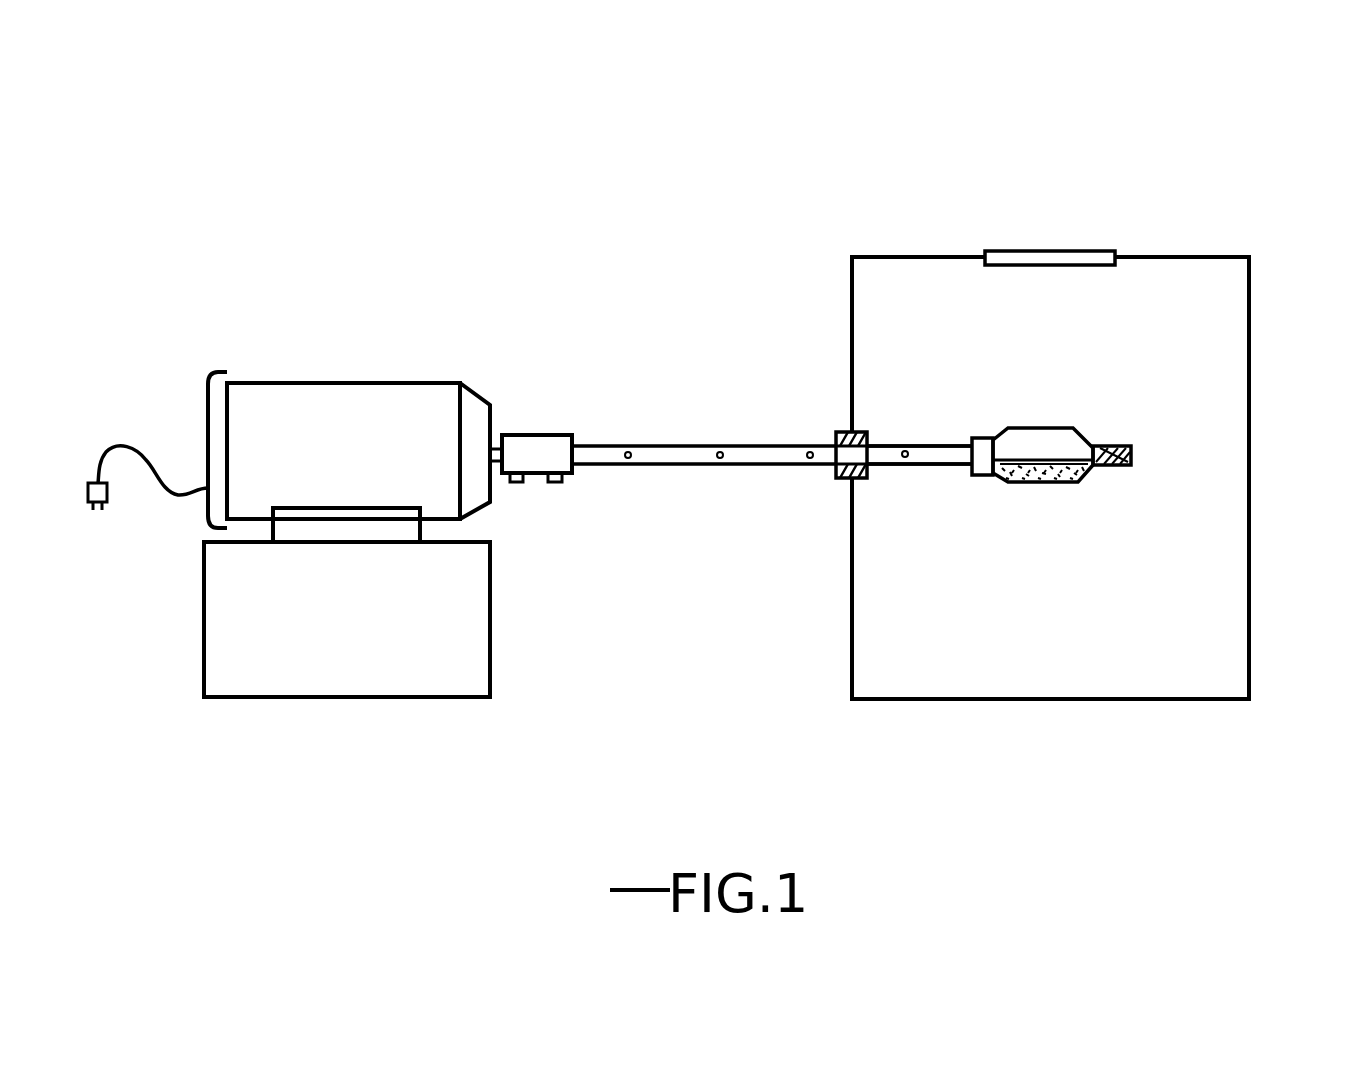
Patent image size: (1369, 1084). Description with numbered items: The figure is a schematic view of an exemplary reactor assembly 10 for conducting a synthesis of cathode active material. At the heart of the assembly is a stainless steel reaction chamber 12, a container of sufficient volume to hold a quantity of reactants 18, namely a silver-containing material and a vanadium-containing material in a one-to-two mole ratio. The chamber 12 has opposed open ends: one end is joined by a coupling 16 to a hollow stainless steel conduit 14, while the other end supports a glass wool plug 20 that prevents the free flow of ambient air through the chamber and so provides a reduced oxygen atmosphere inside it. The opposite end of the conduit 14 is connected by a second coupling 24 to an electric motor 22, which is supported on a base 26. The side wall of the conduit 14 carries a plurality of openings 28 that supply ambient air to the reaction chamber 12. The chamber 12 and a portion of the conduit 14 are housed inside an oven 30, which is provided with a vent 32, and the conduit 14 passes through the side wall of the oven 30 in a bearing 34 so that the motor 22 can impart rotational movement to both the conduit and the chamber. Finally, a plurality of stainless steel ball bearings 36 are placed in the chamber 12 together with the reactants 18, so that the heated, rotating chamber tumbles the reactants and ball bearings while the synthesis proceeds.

The reactor assembly 10 is at (1295, 77).
The reaction chamber 12 is at (1057, 430).
The conduit 14 is at (677, 440).
The coupling 16 is at (985, 437).
The reactants 18 is at (1060, 483).
The glass wool plug 20 is at (1130, 443).
The electric motor 22 is at (390, 417).
The coupling 24 is at (543, 448).
The base 26 is at (453, 637).
The openings 28 is at (720, 464).
The oven 30 is at (1228, 323).
The vent 32 is at (1093, 252).
The bearing 34 is at (867, 433).
The ball bearings 36 is at (1017, 483).